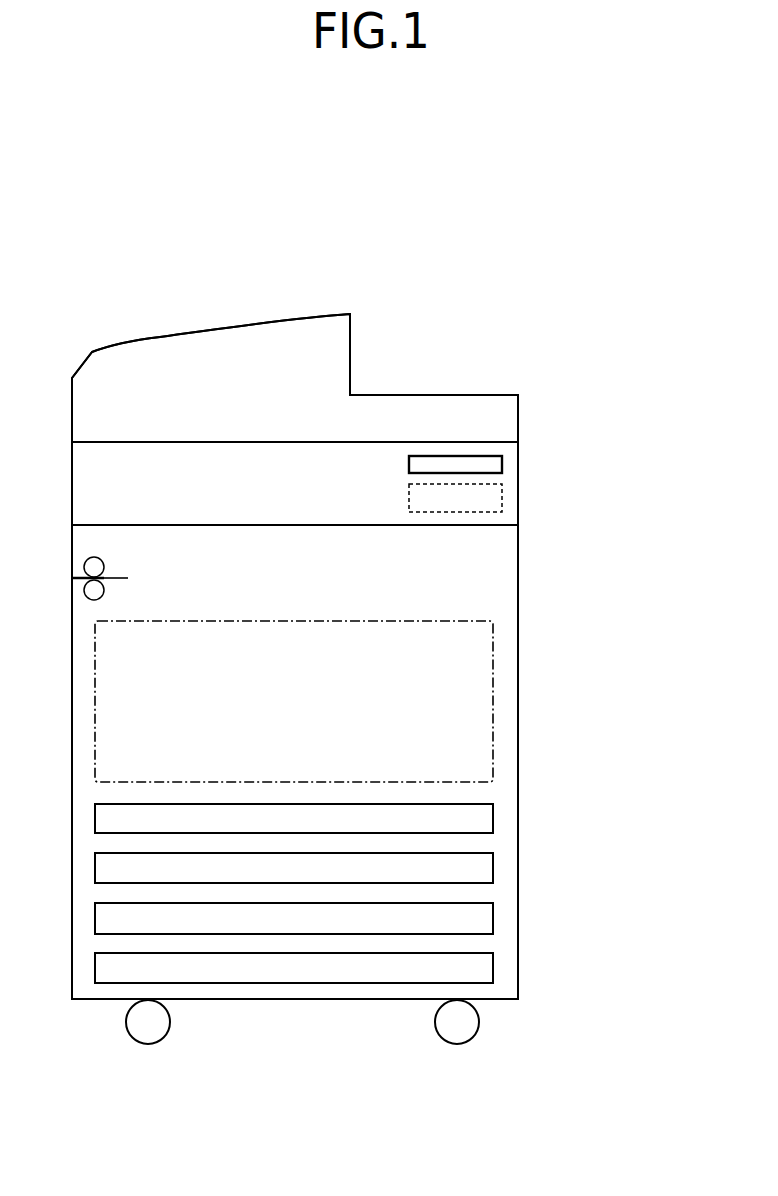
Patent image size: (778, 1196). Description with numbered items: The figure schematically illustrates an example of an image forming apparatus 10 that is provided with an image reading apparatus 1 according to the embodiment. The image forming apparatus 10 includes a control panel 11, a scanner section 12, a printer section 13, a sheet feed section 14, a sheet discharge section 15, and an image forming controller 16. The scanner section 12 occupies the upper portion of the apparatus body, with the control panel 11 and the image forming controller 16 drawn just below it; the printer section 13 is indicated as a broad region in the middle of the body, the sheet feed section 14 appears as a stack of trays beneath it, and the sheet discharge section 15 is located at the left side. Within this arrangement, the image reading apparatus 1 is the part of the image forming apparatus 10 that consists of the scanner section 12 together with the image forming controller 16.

The image reading apparatus 1 is at (520, 348).
The image forming apparatus 10 is at (177, 270).
The control panel 11 is at (503, 460).
The scanner section 12 is at (524, 437).
The printer section 13 is at (494, 699).
The sheet feed section 14 is at (494, 818).
The sheet discharge section 15 is at (104, 562).
The image forming controller 16 is at (503, 498).